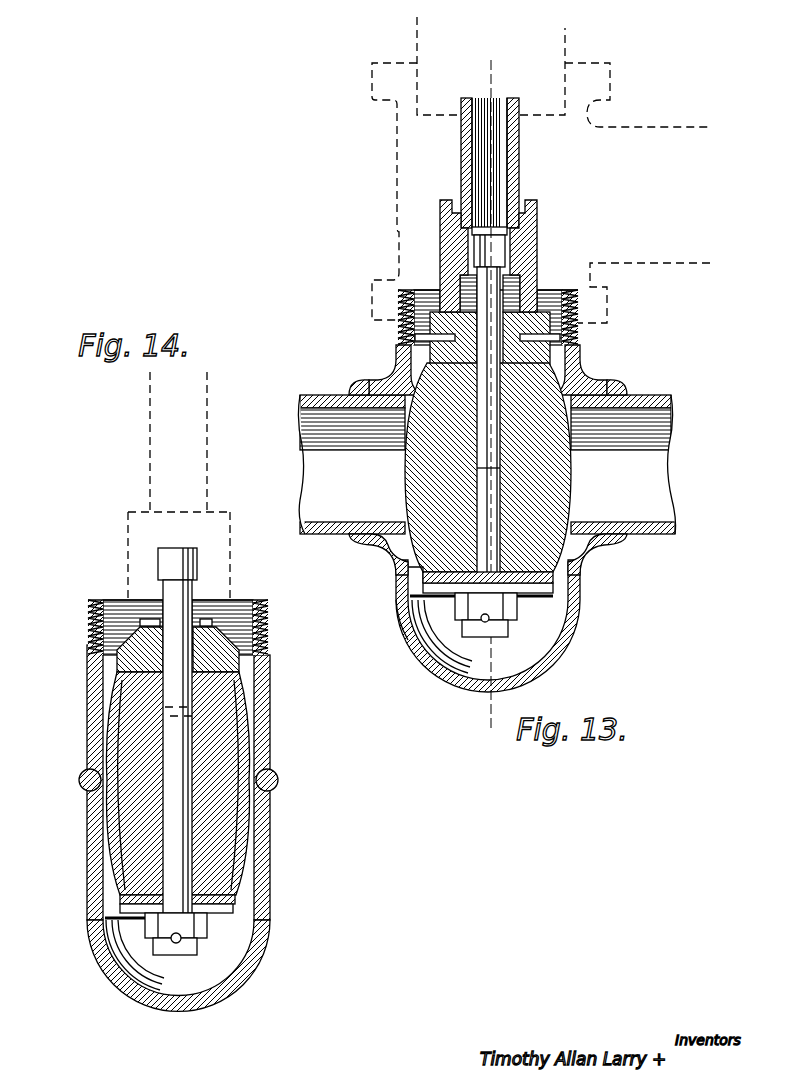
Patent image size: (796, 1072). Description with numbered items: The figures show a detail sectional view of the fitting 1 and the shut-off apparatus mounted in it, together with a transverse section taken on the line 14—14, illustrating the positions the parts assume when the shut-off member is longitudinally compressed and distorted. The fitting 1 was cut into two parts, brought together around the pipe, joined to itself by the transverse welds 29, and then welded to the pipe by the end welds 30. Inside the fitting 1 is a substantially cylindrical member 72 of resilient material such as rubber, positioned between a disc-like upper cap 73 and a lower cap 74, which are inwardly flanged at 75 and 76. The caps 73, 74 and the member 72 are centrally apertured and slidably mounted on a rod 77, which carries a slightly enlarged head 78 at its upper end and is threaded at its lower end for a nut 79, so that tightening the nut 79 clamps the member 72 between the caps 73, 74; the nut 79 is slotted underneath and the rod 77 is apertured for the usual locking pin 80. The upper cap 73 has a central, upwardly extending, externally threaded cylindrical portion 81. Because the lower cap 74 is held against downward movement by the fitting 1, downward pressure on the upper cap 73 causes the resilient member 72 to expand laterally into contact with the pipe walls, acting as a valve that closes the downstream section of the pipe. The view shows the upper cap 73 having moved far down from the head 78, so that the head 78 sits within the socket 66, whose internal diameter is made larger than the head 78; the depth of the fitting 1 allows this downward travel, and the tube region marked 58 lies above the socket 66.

In FIG. 13, the fitting 1 is at (398, 343).
In FIG. 14, the fitting 1 is at (270, 725).
In FIG. 13, the section line 14— 14 is at (491, 98).
In FIG. 13, the transverse welds 29 is at (400, 615).
In FIG. 14, the transverse welds 29 is at (80, 778).
In FIG. 13, the end welds 30 is at (352, 542).
In FIG. 13, the stem guide tube 58 is at (461, 150).
In FIG. 13, the socket 66 is at (515, 220).
In FIG. 13, the substantially cylindrical member 72 is at (571, 497).
In FIG. 14, the substantially cylindrical member 72 is at (120, 715).
In FIG. 13, the upper cap 73 is at (398, 360).
In FIG. 14, the upper cap 73 is at (118, 670).
In FIG. 13, the lower cap 74 is at (423, 584).
In FIG. 14, the lower cap 74 is at (120, 898).
In FIG. 13, the inward flange of upper cap 75 is at (574, 369).
In FIG. 13, the inward flange of lower cap 76 is at (423, 568).
In FIG. 13, the rod 77 is at (485, 468).
In FIG. 14, the rod 77 is at (172, 637).
In FIG. 13, the head 78 is at (480, 249).
In FIG. 14, the head 78 is at (158, 561).
In FIG. 13, the nut 79 is at (517, 608).
In FIG. 13, the locking pin 80 is at (485, 622).
In FIG. 13, the cylindrical portion 81 is at (570, 332).